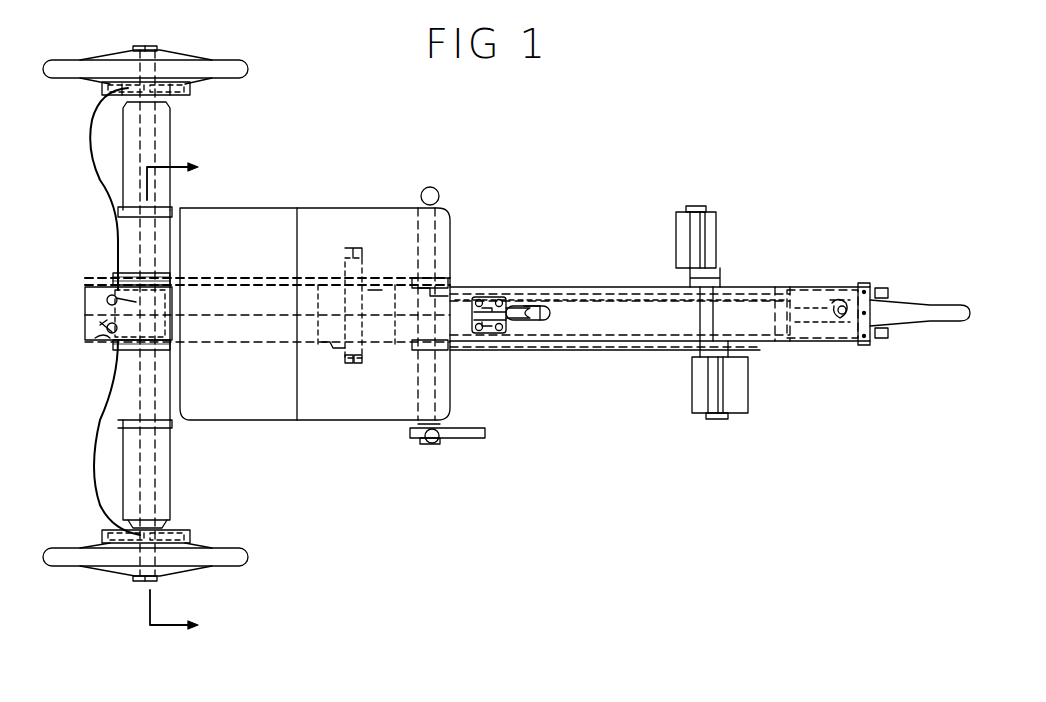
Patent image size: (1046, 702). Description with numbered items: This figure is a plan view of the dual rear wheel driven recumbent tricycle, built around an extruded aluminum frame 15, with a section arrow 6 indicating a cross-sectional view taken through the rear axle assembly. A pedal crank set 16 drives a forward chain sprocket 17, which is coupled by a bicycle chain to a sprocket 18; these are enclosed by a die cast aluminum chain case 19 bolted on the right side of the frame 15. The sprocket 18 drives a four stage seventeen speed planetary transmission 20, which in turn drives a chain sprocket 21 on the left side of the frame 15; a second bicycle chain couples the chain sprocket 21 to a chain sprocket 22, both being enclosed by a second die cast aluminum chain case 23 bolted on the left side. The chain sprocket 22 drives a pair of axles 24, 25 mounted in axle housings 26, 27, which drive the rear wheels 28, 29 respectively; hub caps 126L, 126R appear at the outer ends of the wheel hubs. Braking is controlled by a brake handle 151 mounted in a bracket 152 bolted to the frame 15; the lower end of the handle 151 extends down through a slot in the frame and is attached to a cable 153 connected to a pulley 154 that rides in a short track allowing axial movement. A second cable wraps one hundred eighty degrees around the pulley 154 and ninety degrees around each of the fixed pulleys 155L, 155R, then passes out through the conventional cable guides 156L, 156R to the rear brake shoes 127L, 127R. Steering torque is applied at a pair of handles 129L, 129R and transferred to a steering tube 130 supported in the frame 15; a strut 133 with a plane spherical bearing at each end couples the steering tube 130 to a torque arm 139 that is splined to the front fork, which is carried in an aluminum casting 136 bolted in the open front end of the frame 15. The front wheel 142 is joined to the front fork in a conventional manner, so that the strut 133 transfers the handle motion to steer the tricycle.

The section line 6- 6 is at (180, 399).
The extruded aluminum frame 15 is at (795, 289).
The pedal crank set 16 is at (730, 274).
The forward chain sprocket 17 is at (748, 350).
The sprocket 18 is at (337, 348).
The chain case 19 is at (640, 346).
The planetary transmission 20 is at (455, 236).
The chain sprocket 21 is at (372, 306).
The chain sprocket 22 is at (135, 276).
The chain case 23 is at (248, 276).
The axle 24 is at (168, 140).
The axle 25 is at (158, 455).
The axle housing 26 is at (172, 152).
The axle housing 27 is at (172, 482).
The rear wheel 28 is at (250, 68).
The rear wheel 29 is at (250, 556).
The left hub cap 126L is at (146, 46).
The right hub cap 126R is at (150, 581).
The rear brake shoe 127L is at (192, 88).
The rear brake shoe 127R is at (192, 535).
The handle 129L is at (437, 189).
The handle 129R is at (438, 441).
The steering tube 130 is at (438, 396).
The strut 133 is at (520, 290).
The aluminum casting 136 is at (866, 345).
The torque arm 139 is at (842, 286).
The front wheel 142 is at (952, 305).
The brake handle 151 is at (542, 318).
The bracket 152 is at (488, 297).
The cable 153 is at (213, 318).
The pulley 154 is at (170, 346).
The fixed pulley 155L is at (98, 286).
The fixed pulley 155R is at (100, 340).
The cable guide 156L is at (88, 128).
The cable guide 156R is at (100, 490).